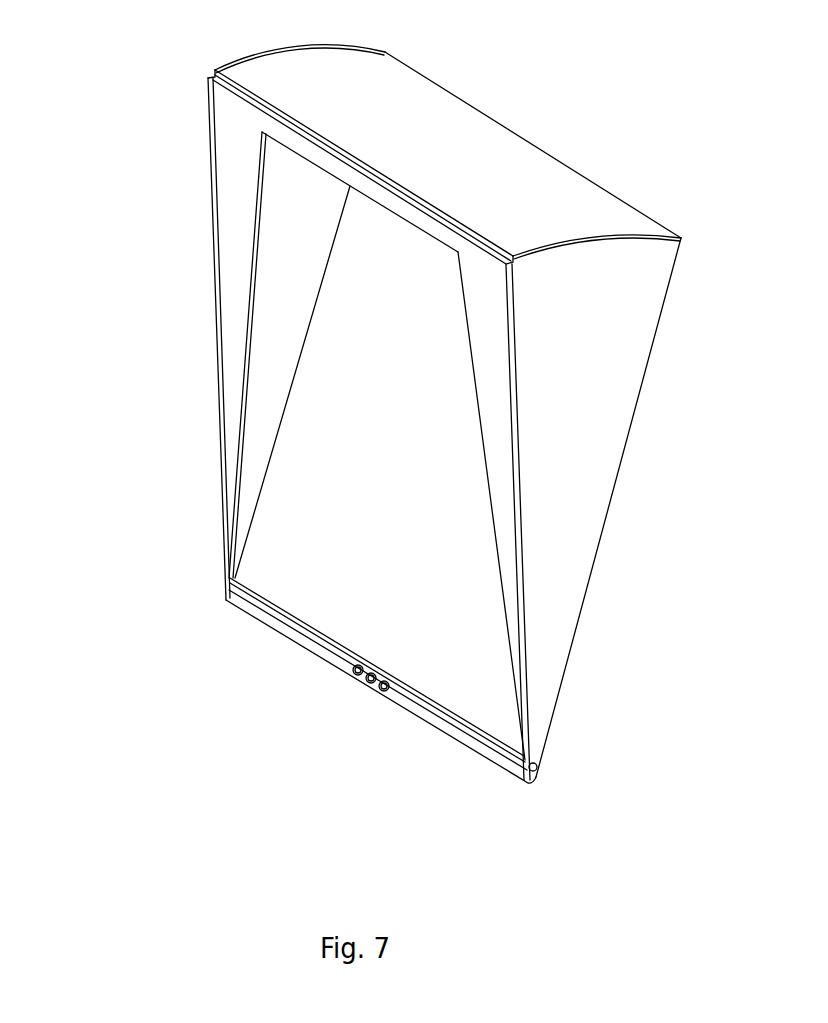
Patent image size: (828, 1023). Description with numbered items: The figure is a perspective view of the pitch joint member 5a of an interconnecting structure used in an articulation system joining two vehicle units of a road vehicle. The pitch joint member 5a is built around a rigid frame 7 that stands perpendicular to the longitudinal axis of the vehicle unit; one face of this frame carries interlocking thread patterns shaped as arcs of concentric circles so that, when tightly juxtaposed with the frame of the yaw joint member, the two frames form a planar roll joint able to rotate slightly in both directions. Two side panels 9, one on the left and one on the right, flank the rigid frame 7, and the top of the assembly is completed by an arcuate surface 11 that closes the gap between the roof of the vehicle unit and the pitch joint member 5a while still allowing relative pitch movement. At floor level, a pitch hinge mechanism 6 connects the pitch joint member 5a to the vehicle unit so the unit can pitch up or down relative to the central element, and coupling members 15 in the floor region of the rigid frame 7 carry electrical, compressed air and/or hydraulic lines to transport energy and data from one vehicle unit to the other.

The pitch joint member 5a is at (152, 142).
The pitch hinge mechanism 6 is at (318, 632).
The rigid frame 7 is at (240, 195).
The side panel 9 is at (605, 270).
The arcuate surface 11 is at (403, 108).
The coupling member 15 is at (372, 683).